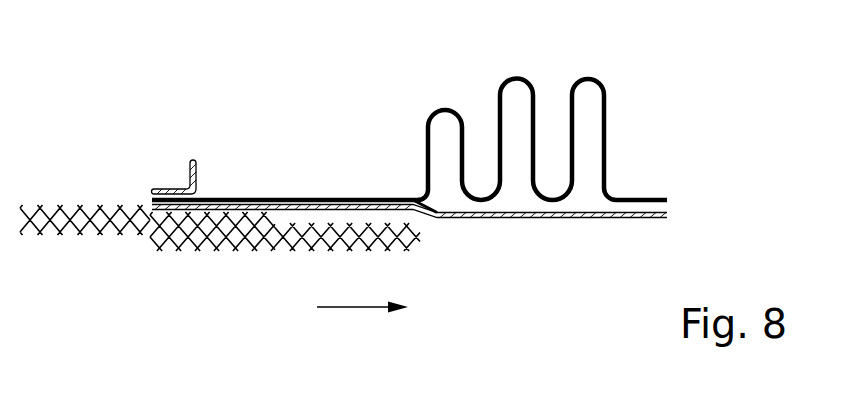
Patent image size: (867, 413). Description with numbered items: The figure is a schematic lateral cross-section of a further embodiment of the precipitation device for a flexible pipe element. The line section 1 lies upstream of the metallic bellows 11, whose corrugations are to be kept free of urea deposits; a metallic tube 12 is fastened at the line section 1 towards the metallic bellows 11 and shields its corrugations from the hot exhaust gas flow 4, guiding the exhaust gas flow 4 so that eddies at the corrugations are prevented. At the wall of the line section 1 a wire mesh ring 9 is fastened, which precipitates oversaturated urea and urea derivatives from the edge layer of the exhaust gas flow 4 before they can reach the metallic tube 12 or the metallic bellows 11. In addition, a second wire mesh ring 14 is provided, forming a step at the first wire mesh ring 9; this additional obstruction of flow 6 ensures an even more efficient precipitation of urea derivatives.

The line section 1 is at (327, 198).
The exhaust gas flow 4 is at (343, 306).
The obstruction of flow 6 is at (159, 252).
The wire mesh ring 9 is at (70, 233).
The metallic bellows 11 is at (515, 77).
The metallic tube 12 is at (463, 218).
The second wire mesh ring 14 is at (250, 249).